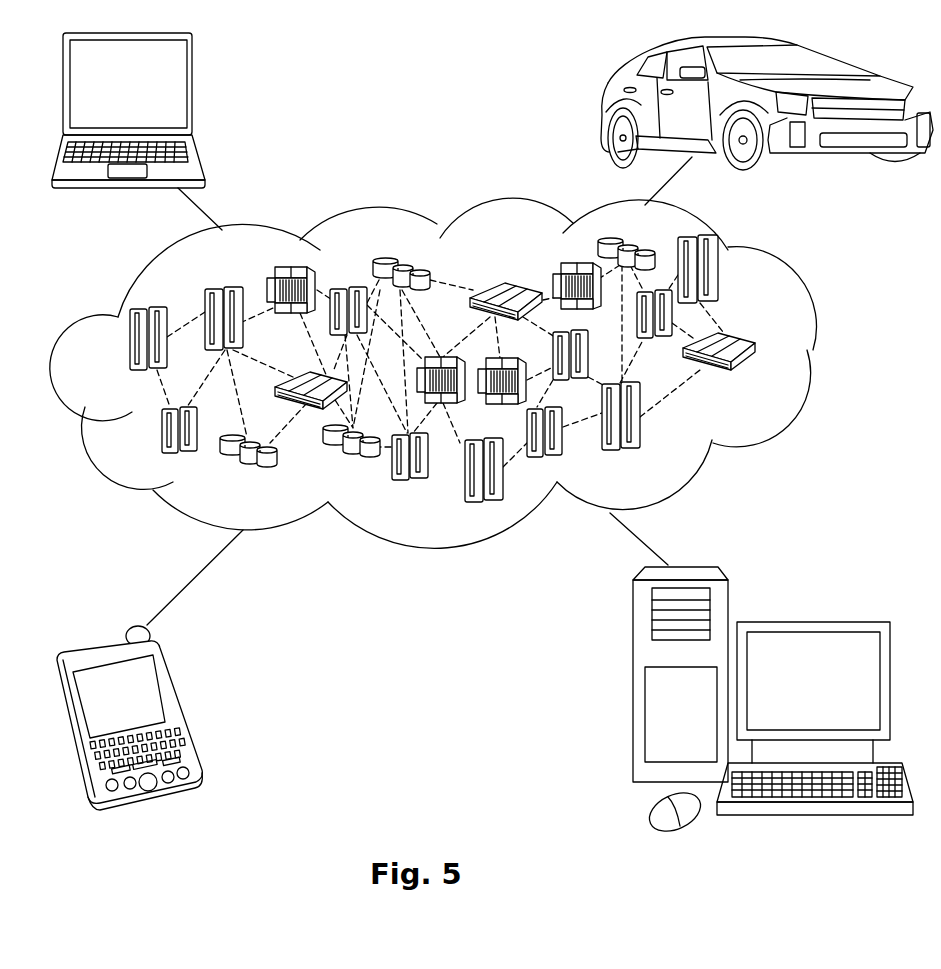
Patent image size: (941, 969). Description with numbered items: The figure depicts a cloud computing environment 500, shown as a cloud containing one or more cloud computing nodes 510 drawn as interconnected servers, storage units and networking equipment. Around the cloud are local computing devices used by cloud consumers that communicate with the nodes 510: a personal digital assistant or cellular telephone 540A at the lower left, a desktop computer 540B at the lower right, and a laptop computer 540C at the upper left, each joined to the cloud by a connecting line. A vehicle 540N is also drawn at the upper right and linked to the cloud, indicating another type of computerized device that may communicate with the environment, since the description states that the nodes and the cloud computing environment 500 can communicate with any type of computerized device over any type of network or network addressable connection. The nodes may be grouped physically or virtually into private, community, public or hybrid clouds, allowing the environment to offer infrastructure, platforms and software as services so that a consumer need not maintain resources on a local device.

The cloud computing environment 500 is at (813, 347).
The cloud computing nodes 510 is at (762, 381).
The personal digital assistant (PDA) or cellular telephone 540A is at (183, 710).
The desktop computer 540B is at (810, 621).
The laptop computer 540C is at (193, 93).
The vehicle 540N is at (603, 108).